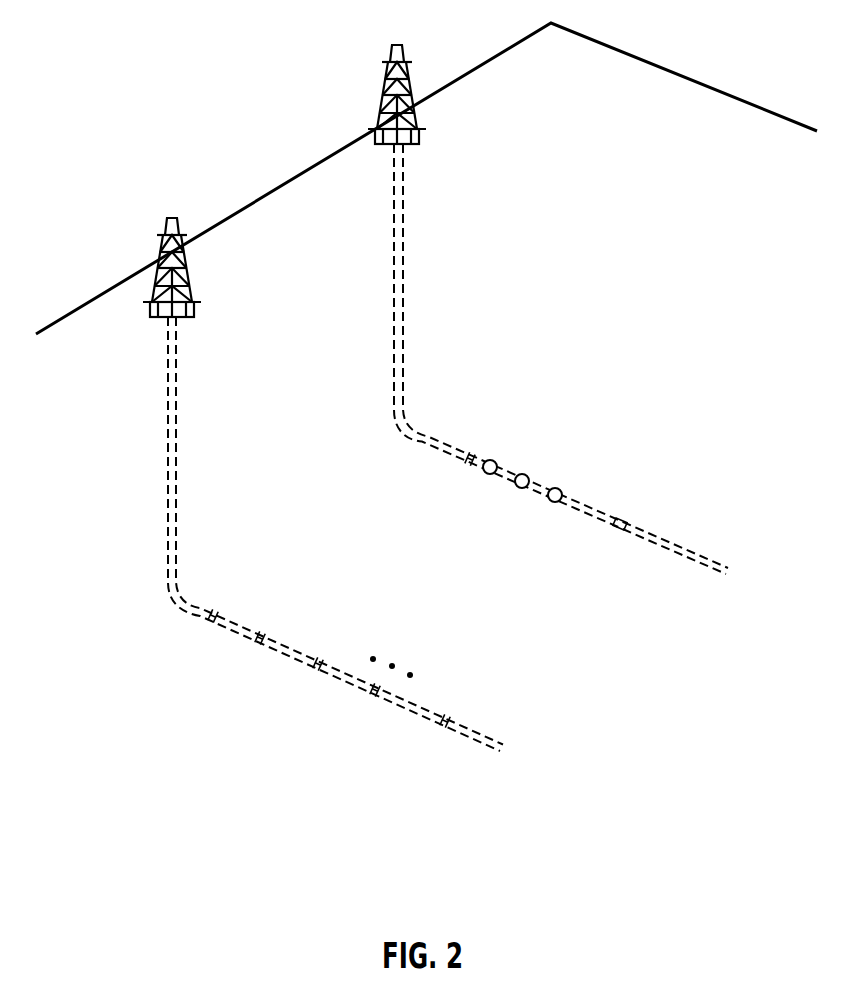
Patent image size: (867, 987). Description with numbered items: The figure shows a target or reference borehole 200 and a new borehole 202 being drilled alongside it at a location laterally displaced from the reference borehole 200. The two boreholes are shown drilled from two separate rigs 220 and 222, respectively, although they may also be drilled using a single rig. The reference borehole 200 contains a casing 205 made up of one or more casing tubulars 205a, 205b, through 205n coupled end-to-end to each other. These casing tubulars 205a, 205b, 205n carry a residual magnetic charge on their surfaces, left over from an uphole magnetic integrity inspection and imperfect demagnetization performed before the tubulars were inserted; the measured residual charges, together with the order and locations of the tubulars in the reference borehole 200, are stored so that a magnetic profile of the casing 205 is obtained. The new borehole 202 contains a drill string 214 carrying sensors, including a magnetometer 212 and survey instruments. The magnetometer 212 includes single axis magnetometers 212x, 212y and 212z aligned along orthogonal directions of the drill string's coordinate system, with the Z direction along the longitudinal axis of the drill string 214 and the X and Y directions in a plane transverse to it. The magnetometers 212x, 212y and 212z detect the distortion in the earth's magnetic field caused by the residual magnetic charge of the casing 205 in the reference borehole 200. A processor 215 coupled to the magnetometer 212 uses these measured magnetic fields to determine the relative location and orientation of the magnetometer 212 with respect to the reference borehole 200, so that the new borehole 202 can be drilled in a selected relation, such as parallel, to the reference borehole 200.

The target borehole 200 is at (196, 606).
The new borehole 202 is at (422, 432).
The casing 205 is at (348, 681).
The casing tubular 205a is at (234, 622).
The casing tubular 205b is at (290, 650).
The casing tubular 205n is at (448, 698).
The magnetometer 212 is at (567, 467).
The single axis magnetometer 212x is at (497, 461).
The single axis magnetometer 212y is at (528, 475).
The single axis magnetometer 212z is at (601, 477).
The drill string 214 is at (468, 455).
The processor 215 is at (621, 523).
The rig 220 is at (163, 226).
The rig 222 is at (390, 53).